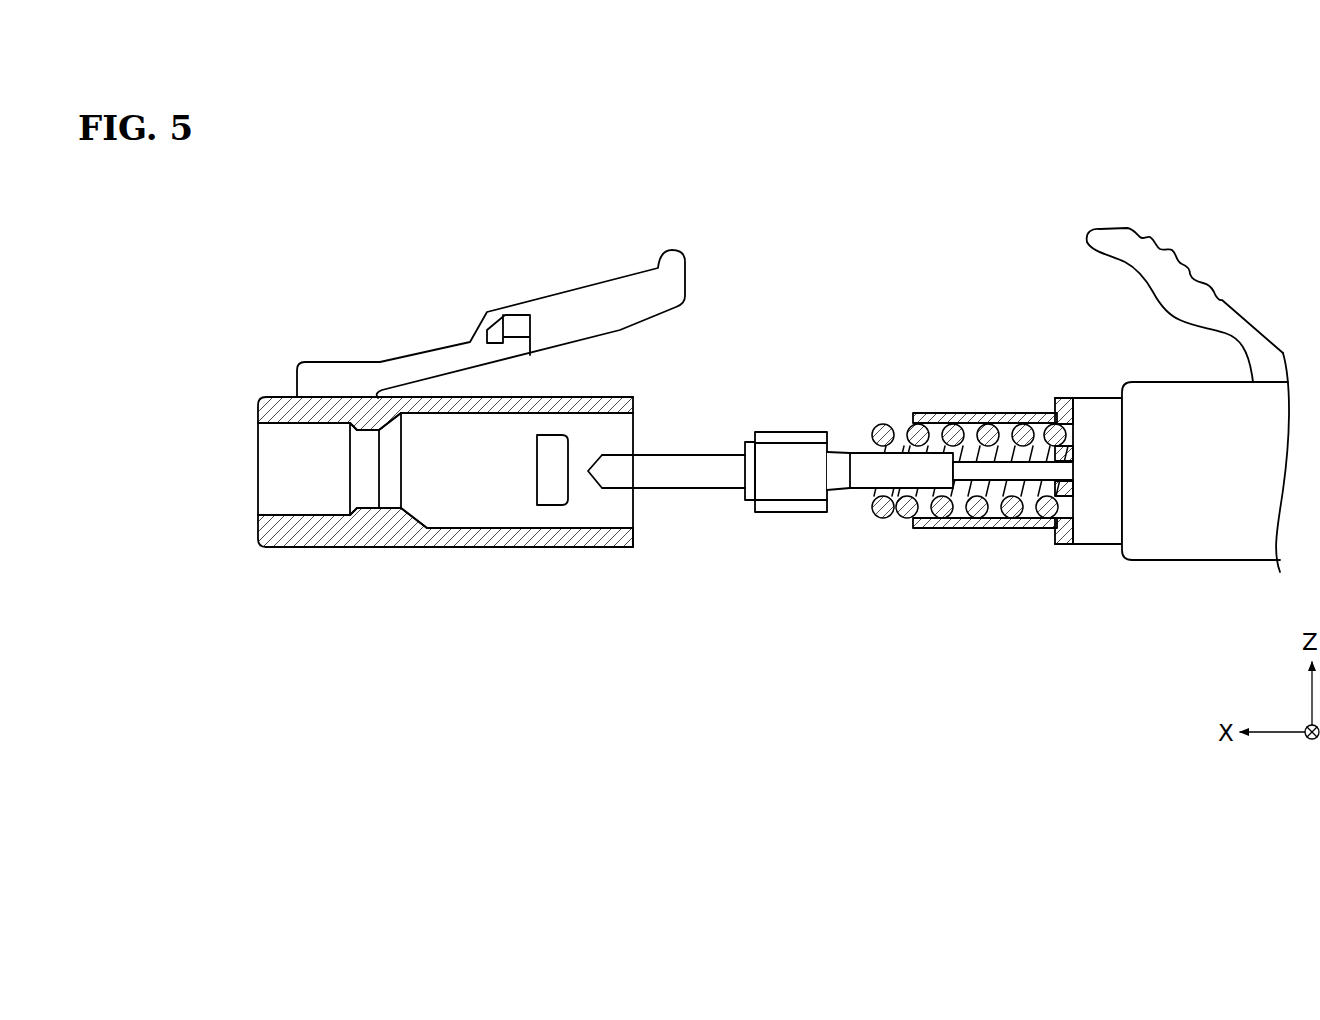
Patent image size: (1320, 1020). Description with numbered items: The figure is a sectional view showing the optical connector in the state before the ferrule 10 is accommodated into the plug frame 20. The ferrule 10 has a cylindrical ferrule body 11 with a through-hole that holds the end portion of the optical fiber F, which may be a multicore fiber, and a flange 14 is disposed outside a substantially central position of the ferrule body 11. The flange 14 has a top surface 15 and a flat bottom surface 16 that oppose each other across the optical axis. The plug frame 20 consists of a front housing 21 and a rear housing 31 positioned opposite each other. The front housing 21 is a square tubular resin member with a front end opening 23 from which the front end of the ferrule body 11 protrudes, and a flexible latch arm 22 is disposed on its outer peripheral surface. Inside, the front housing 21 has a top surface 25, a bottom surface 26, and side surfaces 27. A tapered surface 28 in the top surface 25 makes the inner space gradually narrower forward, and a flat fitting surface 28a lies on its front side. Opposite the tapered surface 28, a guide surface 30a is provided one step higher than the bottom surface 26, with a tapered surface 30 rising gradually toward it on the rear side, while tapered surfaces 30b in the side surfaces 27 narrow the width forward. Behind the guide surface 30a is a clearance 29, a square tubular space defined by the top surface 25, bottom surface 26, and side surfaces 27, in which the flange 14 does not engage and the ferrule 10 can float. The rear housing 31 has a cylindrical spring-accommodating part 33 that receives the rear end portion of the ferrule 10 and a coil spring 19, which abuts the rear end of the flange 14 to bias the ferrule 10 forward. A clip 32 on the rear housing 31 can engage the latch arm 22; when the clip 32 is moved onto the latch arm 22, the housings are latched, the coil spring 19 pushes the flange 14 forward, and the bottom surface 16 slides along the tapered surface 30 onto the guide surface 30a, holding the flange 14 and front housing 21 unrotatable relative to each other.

The ferrule 10 is at (729, 521).
The ferrule body 11 is at (684, 465).
The flange 14 is at (807, 515).
The top surface 15 is at (792, 432).
The bottom surface 16 is at (772, 513).
The coil spring 19 is at (950, 435).
The plug frame 20 is at (948, 682).
The front housing 21 is at (260, 543).
The latch arm 22 is at (615, 295).
The front end opening 23 is at (258, 470).
The top surface 25 is at (559, 416).
The bottom surface 26 is at (521, 524).
The side surfaces 27 is at (605, 520).
The tapered surface 28 is at (390, 423).
The fitting surface 28a is at (372, 428).
The clearance 29 is at (450, 436).
The tapered surface 30 is at (430, 526).
The guide surface 30a is at (386, 508).
The tapered surfaces 30b is at (393, 470).
The rear housing 31 is at (1133, 565).
The clip 32 is at (1181, 262).
The spring-accommodating part 33 is at (955, 528).
The optical fiber F is at (1033, 478).